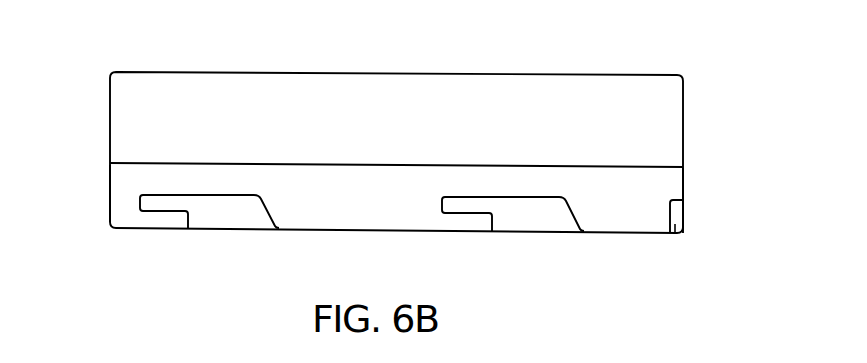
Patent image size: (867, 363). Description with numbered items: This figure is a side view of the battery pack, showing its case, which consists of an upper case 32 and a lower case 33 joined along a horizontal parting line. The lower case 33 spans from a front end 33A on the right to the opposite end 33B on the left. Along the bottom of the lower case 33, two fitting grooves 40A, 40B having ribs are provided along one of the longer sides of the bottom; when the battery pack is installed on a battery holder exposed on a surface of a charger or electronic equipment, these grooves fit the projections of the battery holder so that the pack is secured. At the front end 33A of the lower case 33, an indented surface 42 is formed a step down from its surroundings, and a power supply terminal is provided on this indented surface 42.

The upper case 32 is at (522, 85).
The lower case 33 is at (395, 220).
The front end of the lower case 33A is at (683, 172).
The left side portion of lower casing 33B is at (110, 212).
The fitting groove 40A is at (225, 217).
The fitting groove 40B is at (527, 221).
The indented surface 42 is at (678, 235).